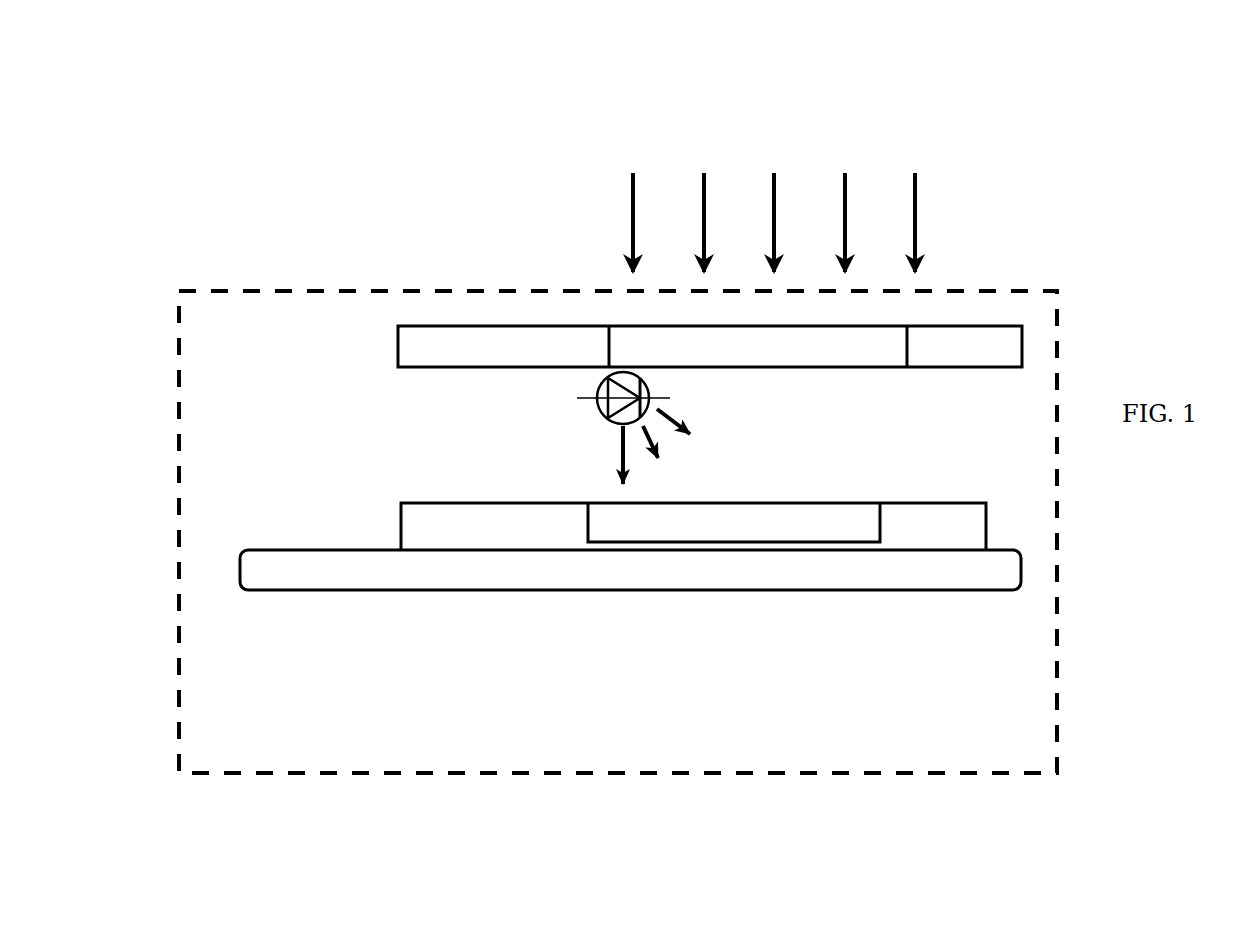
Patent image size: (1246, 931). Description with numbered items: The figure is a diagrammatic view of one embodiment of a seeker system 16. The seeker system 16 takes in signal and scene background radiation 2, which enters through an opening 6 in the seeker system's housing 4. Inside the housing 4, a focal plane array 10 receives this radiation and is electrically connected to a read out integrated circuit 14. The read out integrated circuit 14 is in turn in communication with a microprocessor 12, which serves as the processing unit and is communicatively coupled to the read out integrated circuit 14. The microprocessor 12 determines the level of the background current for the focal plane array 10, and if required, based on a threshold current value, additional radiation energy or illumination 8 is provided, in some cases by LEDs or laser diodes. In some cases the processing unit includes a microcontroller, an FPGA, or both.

The signal and scene background radiation 2 is at (654, 133).
The housing 4 is at (474, 337).
The opening 6 is at (866, 349).
The additional illumination 8 is at (570, 398).
The focal plane array 10 is at (494, 527).
The microprocessor 12 is at (519, 564).
The read out integrated circuit 14 is at (741, 526).
The seeker system 16 is at (1022, 693).